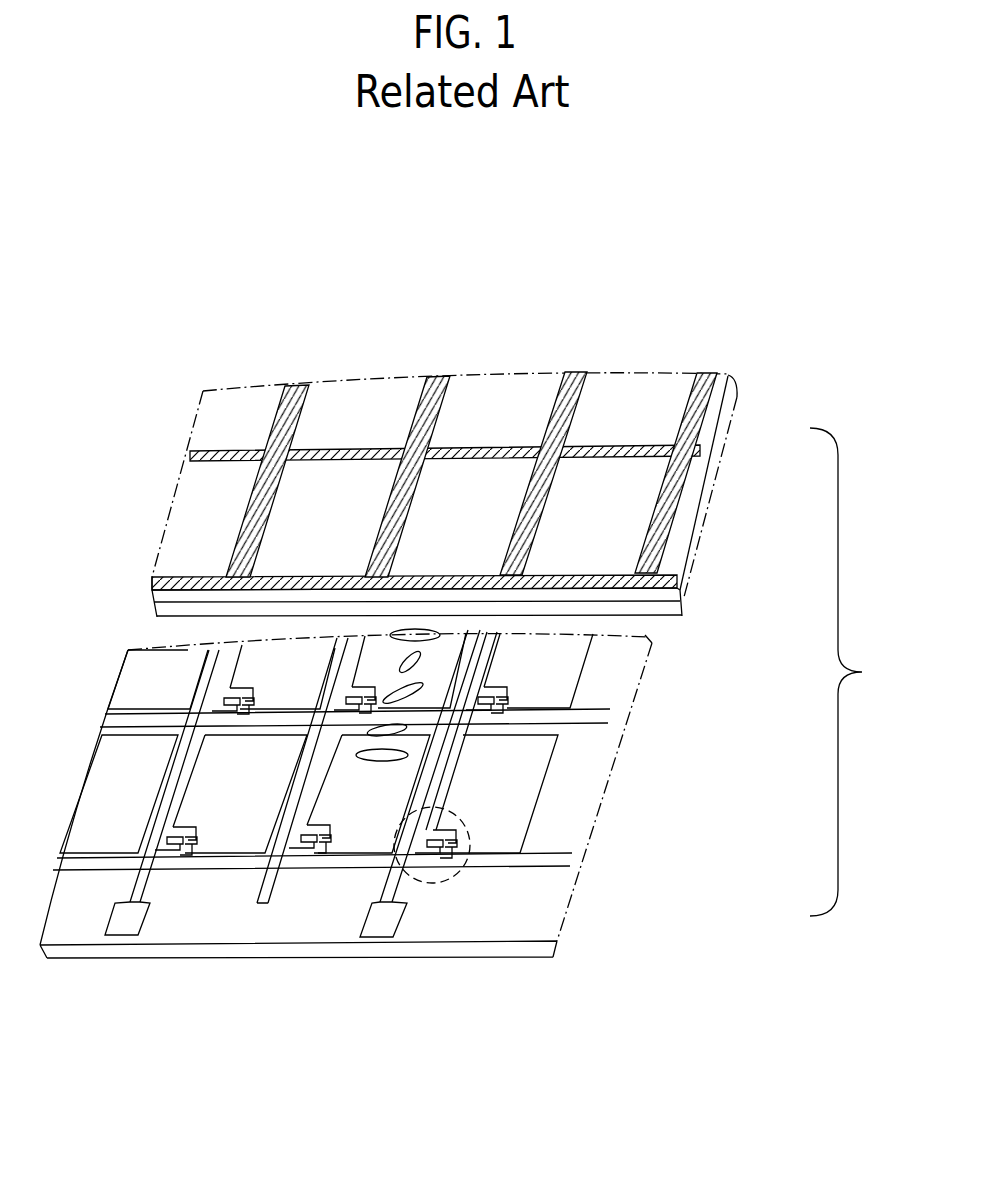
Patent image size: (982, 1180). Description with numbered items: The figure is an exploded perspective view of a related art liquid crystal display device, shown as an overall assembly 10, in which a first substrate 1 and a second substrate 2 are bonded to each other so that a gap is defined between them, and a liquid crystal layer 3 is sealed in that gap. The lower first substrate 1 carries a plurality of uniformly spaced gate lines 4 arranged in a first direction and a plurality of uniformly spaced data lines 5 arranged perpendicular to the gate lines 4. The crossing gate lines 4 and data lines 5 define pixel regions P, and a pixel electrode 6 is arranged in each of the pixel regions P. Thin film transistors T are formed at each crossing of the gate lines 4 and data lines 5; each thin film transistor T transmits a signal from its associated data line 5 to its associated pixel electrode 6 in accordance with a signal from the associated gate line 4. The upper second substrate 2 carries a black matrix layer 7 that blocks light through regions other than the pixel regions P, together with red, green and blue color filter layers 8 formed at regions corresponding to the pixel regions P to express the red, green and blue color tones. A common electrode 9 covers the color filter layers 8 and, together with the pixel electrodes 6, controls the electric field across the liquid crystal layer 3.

The first substrate 1 is at (520, 950).
The second substrate 2 is at (665, 595).
The liquid crystal layer 3 is at (385, 706).
The gate lines 4 is at (533, 865).
The data lines 5 is at (392, 887).
The pixel electrodes 6 is at (537, 803).
The black matrix layer 7 is at (705, 453).
The color filter layers 8 is at (237, 498).
The common electrode 9 is at (665, 607).
The liquid crystal display panel 10 is at (855, 672).
The pixel regions P is at (358, 743).
The thin film transistors T is at (435, 882).